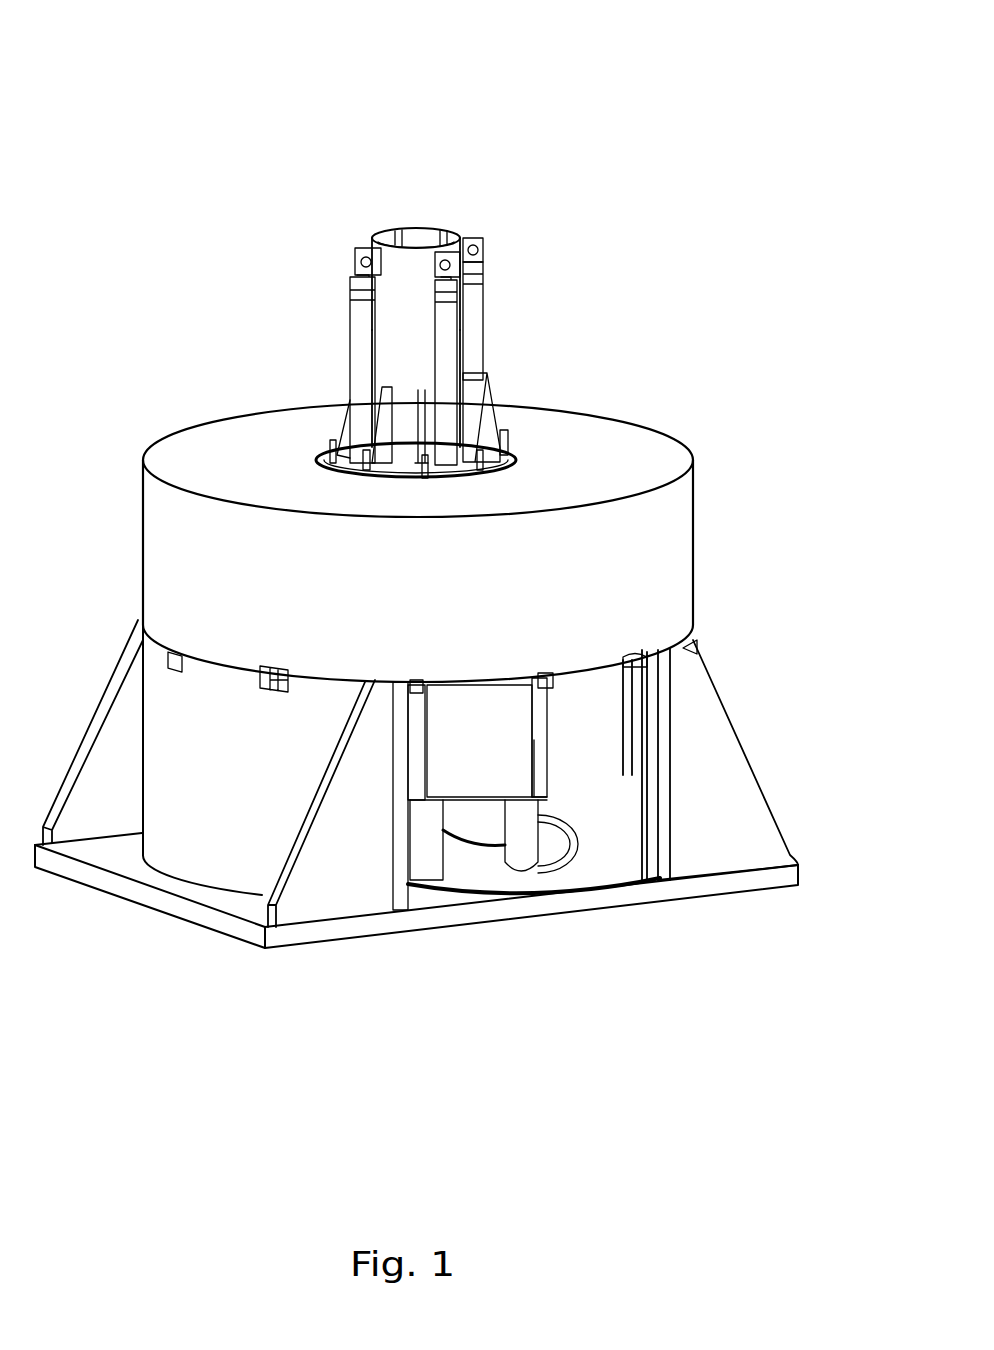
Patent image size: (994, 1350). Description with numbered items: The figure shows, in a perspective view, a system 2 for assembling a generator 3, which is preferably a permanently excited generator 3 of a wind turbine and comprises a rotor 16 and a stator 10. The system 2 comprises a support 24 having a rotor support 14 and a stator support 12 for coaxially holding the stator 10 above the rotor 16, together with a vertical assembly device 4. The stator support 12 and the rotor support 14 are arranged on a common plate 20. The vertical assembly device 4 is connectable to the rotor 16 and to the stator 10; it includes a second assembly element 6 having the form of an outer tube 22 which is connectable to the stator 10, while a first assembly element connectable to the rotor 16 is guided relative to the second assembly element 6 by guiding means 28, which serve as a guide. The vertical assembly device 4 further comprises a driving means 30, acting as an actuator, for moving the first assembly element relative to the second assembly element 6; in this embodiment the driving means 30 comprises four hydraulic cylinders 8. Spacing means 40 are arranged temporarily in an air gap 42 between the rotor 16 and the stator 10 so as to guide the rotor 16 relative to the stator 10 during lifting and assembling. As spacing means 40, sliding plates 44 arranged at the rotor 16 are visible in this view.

The system 2 is at (133, 97).
The generator 3 is at (762, 472).
The vertical assembly device 4 is at (377, 207).
The second assembly element 6 is at (417, 313).
The hydraulic cylinder 8 is at (367, 382).
The stator 10 is at (168, 515).
The stator support 12 is at (132, 810).
The rotor support 14 is at (417, 853).
The rotor 16 is at (438, 770).
The common plate 20 is at (688, 887).
The outer tube 22 is at (396, 356).
The support 24 is at (733, 653).
The guiding means 28 is at (408, 203).
The driving means 30 is at (359, 437).
The spacing means 40 is at (541, 720).
The air gap 42 is at (597, 675).
The sliding plate 44 is at (537, 770).